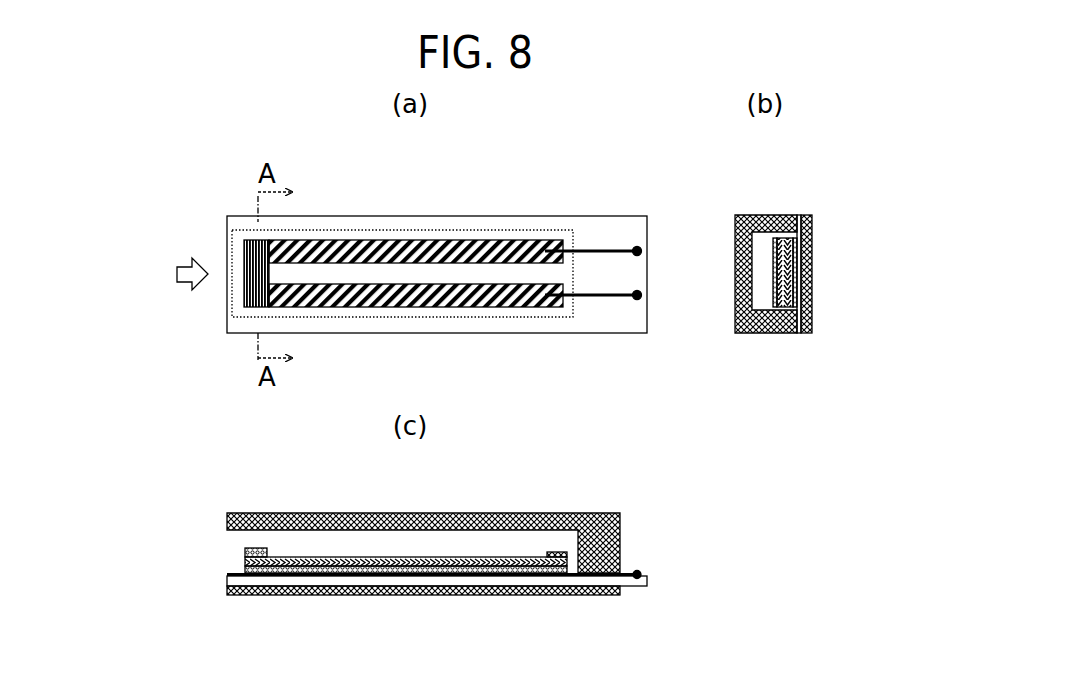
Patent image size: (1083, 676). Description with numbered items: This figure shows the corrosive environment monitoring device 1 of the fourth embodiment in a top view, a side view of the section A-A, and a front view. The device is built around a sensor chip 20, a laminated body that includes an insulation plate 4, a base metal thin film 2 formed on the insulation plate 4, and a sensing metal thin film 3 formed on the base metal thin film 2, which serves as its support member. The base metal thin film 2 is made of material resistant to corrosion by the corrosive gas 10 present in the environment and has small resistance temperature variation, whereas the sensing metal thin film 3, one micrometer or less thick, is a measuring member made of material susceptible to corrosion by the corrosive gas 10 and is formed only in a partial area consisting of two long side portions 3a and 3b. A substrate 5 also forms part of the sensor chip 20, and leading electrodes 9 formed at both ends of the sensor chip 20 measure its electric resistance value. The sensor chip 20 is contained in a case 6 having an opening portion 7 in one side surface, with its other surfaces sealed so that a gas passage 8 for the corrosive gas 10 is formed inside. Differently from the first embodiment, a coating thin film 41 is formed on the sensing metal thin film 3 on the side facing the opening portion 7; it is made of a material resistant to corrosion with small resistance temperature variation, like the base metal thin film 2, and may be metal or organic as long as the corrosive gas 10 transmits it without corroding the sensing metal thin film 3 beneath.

The corrosive environment monitoring device 1 is at (600, 216).
The base metal thin film 2 is at (791, 247).
The sensing metal thin film 3 is at (783, 252).
The long side portion 3a is at (390, 251).
The long side portion 3b is at (387, 300).
The insulation plate 4 is at (806, 225).
The substrate 5 is at (534, 320).
The case 6 is at (735, 300).
The opening portion 7 is at (227, 249).
The gas passage 8 is at (566, 240).
The leading electrodes 9 is at (600, 297).
The corrosive gas 10 is at (178, 264).
The sensor chip 20 is at (206, 556).
The coating thin film 41 is at (252, 240).